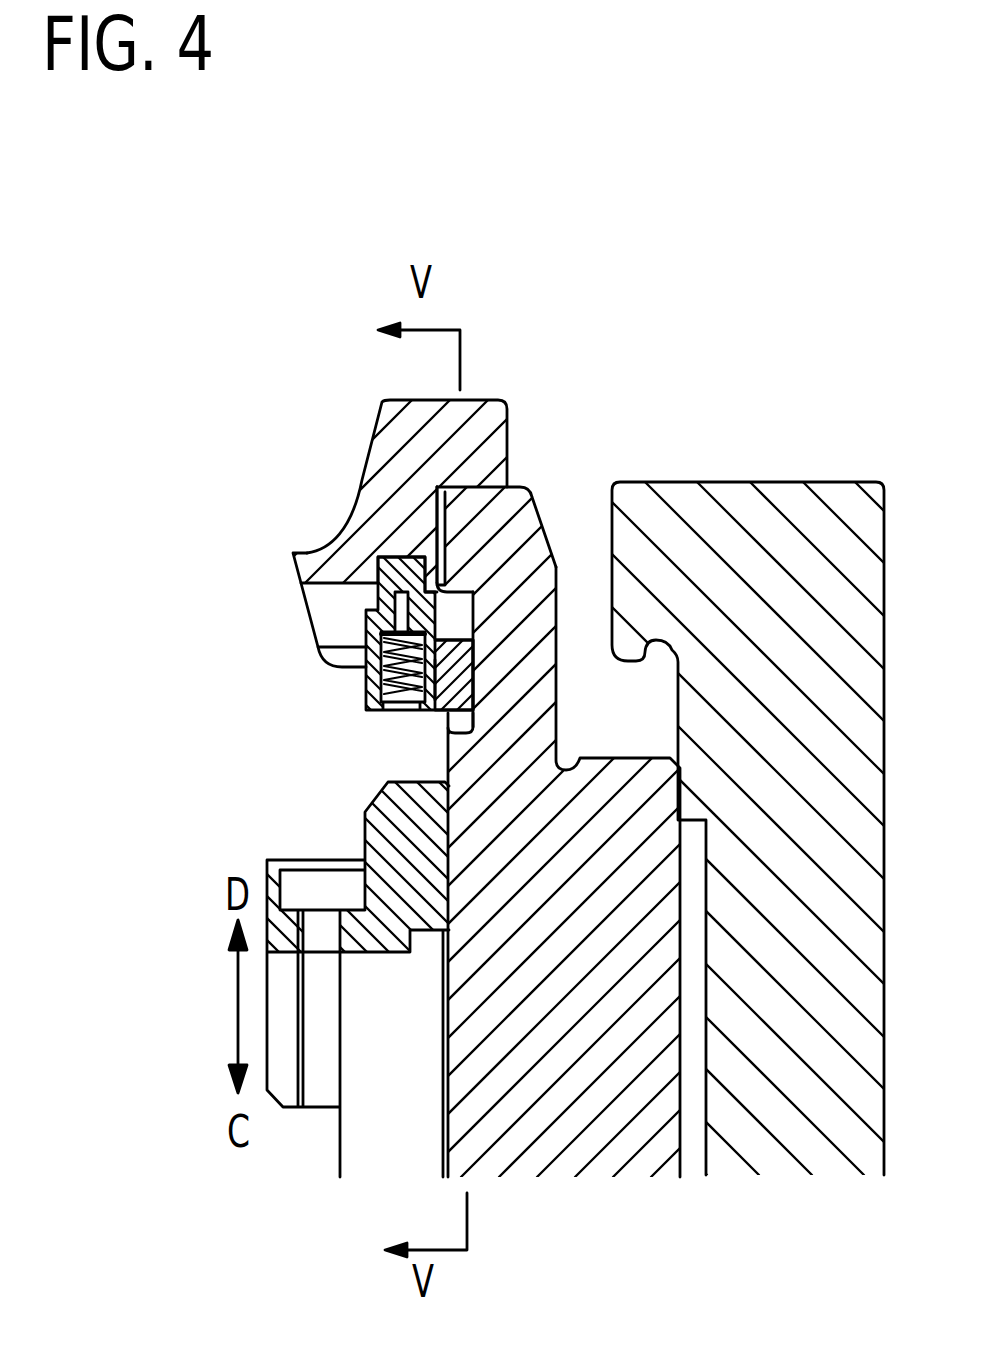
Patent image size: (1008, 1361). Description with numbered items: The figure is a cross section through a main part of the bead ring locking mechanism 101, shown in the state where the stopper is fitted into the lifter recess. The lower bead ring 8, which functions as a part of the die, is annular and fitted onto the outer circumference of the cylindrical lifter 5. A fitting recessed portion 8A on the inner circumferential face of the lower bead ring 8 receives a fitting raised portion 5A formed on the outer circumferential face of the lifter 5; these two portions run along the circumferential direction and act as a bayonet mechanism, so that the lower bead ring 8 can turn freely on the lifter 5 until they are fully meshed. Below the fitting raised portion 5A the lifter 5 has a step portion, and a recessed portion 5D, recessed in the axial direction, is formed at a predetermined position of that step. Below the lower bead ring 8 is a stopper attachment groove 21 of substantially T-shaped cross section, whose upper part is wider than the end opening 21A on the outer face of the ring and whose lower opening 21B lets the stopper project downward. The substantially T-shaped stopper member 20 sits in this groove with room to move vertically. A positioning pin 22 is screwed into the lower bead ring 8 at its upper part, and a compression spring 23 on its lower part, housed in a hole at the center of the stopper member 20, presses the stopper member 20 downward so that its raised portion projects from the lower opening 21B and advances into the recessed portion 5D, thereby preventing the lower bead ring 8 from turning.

The bead ring locking mechanism 101 is at (532, 437).
The lifter 5 is at (620, 1125).
The fitting raised portion 5A is at (450, 533).
The recessed portion 5D is at (447, 718).
The lower bead ring 8 is at (387, 418).
The fitting recessed portion 8A is at (440, 508).
The stopper member 20 is at (450, 670).
The stopper attachment groove 21 is at (455, 608).
The end opening 21A is at (318, 613).
The lower opening 21B is at (366, 685).
The positioning pin 22 is at (385, 561).
The compression spring 23 is at (378, 703).